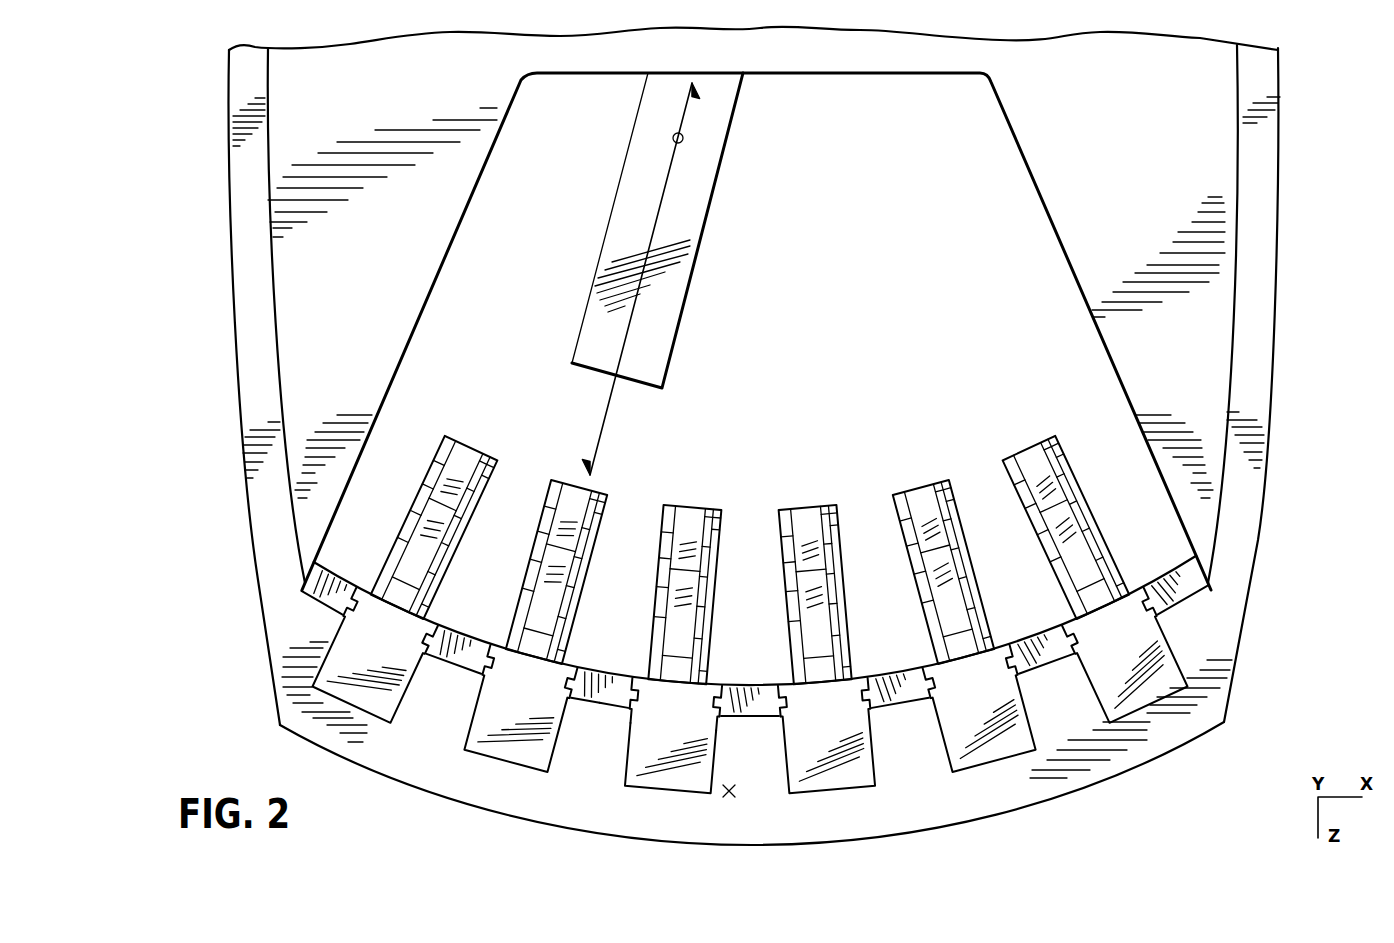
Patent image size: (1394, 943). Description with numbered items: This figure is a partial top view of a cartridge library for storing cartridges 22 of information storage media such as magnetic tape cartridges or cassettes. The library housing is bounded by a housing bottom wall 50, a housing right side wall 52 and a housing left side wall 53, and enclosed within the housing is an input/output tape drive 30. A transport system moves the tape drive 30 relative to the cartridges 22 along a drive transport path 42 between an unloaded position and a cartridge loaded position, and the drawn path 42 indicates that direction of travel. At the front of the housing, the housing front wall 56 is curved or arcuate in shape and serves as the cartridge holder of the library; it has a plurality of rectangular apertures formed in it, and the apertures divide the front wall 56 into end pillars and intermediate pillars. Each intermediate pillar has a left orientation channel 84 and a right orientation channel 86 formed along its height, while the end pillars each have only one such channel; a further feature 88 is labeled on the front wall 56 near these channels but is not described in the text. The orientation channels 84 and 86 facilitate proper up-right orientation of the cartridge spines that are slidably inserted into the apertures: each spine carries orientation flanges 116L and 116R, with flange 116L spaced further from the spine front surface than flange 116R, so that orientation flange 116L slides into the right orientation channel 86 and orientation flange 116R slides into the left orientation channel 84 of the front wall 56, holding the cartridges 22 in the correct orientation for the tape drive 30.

The cartridge 22 is at (430, 482).
The input/output tape drive 30 is at (712, 241).
The drive transport path 42 is at (663, 198).
The housing bottom wall 50 is at (1157, 737).
The housing right side wall 52 is at (1238, 297).
The housing left side wall 53 is at (272, 352).
The housing front wall 56 is at (750, 723).
The left orientation channel 84 is at (580, 717).
The right orientation channel 86 is at (622, 703).
The notch 88 is at (742, 712).
The orientation flange 116L is at (637, 693).
The orientation flange 116R is at (712, 705).